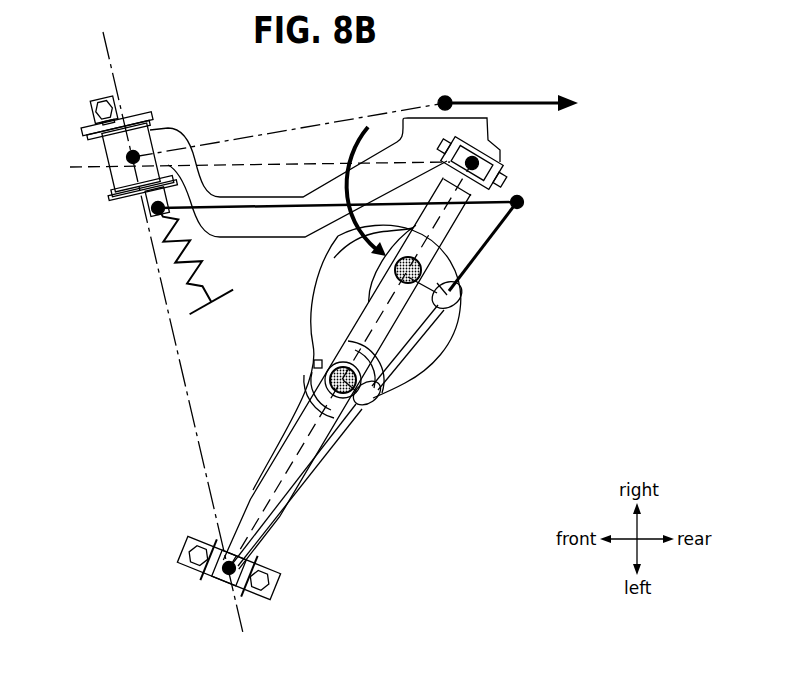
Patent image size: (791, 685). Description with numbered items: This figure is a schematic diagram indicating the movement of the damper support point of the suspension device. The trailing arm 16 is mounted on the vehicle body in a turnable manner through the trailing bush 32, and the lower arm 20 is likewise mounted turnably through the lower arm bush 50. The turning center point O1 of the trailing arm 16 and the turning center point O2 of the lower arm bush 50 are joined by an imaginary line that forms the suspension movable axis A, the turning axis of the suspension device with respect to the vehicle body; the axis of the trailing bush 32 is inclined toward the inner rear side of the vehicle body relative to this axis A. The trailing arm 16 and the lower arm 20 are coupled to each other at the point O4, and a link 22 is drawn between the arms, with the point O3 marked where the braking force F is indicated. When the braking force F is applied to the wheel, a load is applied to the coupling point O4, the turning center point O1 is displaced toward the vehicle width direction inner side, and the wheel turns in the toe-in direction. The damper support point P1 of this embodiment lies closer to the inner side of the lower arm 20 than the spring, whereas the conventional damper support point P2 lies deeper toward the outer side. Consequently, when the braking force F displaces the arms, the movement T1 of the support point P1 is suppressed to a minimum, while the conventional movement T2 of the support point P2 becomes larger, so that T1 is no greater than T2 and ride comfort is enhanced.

The suspension movable axis A is at (185, 408).
The trailing bush 32 is at (96, 183).
The turning center point of the trailing arm O1 is at (74, 167).
The trailing arm 16 is at (260, 249).
The force application point O3 is at (440, 100).
The braking force F is at (511, 92).
The lower arm 20 is at (418, 400).
The coupling point of the trailing arm and the lower arm O4 is at (500, 153).
The rod 22 is at (513, 166).
The damper support point in a conventional technique P2 is at (394, 265).
The movement of the damper support point in the conventional technique T2 is at (464, 291).
The damper support point in this embodiment P1 is at (320, 381).
The movement of the damper support point in this embodiment T1 is at (350, 405).
The turning center point of the lower arm bush O2 is at (250, 562).
The lower arm bush 50 is at (211, 596).